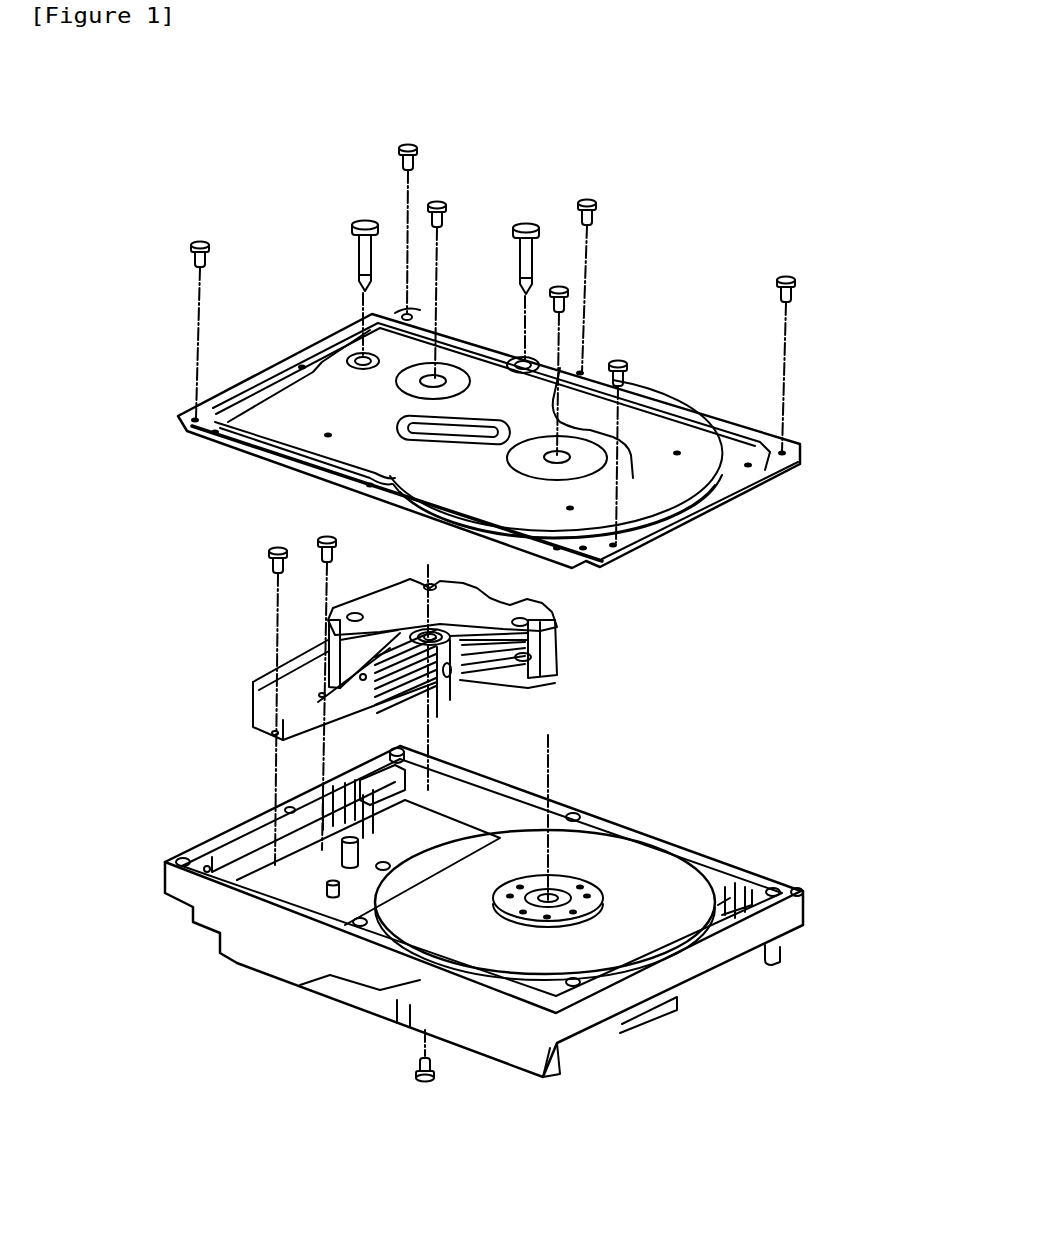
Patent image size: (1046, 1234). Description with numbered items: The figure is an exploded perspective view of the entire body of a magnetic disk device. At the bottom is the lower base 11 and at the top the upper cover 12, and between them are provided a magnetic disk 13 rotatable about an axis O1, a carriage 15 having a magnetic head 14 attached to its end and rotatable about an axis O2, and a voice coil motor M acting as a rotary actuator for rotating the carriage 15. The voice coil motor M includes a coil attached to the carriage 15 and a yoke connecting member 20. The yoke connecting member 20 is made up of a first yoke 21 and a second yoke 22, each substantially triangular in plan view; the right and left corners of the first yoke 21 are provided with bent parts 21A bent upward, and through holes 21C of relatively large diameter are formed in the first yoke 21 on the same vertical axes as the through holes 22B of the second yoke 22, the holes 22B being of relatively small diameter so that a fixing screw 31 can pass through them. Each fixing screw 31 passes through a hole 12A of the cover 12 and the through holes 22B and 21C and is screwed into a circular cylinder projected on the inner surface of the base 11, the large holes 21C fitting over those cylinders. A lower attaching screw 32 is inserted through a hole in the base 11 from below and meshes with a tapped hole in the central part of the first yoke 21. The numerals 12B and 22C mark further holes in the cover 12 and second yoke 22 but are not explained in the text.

The lower base 11 is at (703, 967).
The upper cover 12 is at (736, 504).
The hole of the cover 12A is at (362, 357).
The screw hole of cover 12B is at (409, 315).
The magnetic disk 13 is at (640, 853).
The magnetic head 14 is at (315, 695).
The carriage 15 is at (443, 688).
The yoke connecting member 20 is at (439, 663).
The first yoke 21 is at (438, 668).
The bent parts 21A is at (330, 640).
The through holes 21C is at (525, 657).
The second yoke 22 is at (463, 585).
The through holes 22B is at (356, 616).
The pivot hole of yoke 22C is at (428, 585).
The fixing screw 31 is at (360, 224).
The lower attaching screw 32 is at (420, 1070).
The voice coil motor M is at (383, 585).
The axis O1 is at (550, 757).
The axis O2 is at (427, 607).